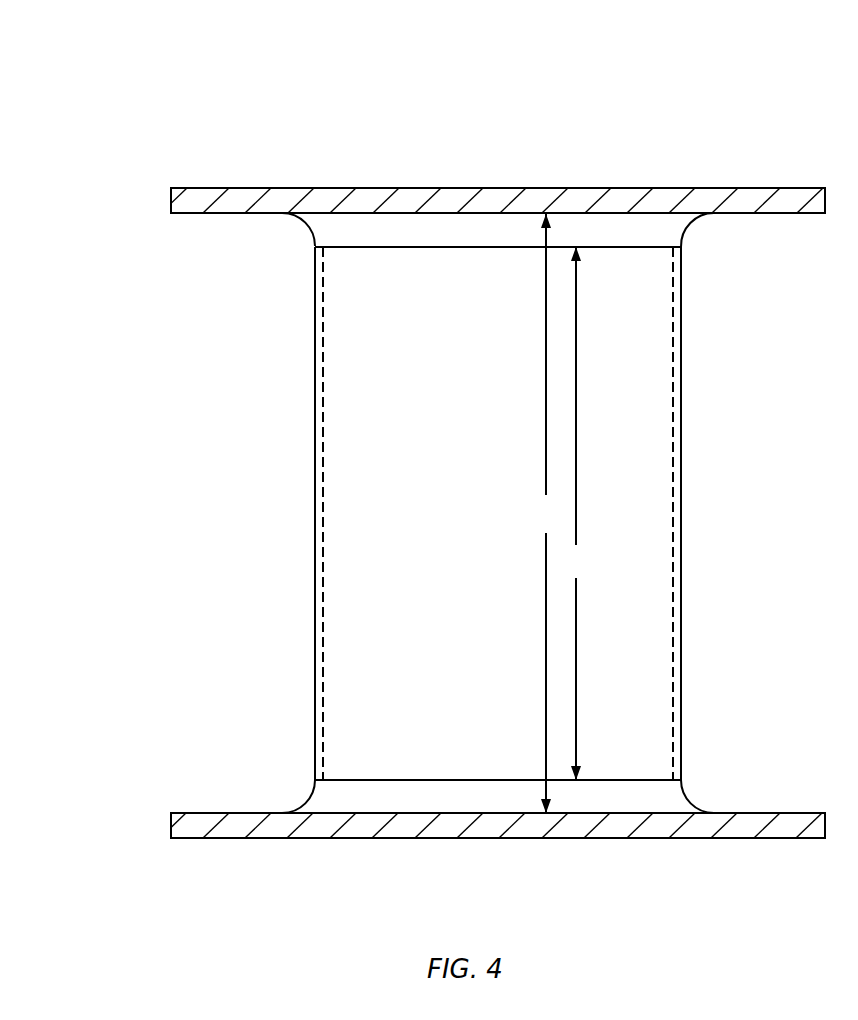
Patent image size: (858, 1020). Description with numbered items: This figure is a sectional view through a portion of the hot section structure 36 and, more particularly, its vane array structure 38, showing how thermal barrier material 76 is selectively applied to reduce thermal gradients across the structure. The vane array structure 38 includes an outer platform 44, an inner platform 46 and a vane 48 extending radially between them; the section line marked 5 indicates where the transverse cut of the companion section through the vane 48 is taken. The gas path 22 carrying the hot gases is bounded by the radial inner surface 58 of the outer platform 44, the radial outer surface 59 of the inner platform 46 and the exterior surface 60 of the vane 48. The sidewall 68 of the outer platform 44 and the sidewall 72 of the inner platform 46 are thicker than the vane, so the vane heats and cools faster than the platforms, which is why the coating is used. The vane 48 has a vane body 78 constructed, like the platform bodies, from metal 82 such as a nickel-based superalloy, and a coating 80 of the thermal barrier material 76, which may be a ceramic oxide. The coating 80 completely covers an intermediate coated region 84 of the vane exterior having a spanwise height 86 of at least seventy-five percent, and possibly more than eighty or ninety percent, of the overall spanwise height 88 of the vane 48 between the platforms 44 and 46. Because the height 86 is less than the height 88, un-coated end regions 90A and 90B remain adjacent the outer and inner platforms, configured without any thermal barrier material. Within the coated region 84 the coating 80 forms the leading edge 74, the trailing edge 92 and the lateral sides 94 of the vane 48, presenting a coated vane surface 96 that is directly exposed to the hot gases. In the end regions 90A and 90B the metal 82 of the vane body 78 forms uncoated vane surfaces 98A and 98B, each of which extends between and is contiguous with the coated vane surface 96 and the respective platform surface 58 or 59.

The gas path 22 is at (233, 348).
The hot section structure 36 is at (156, 108).
The vane array structure 38 is at (200, 148).
The outer platform 44 is at (315, 186).
The inner platform 46 is at (283, 846).
The vane 48 is at (303, 483).
The radial inner surface 58 is at (198, 214).
The radial outer surface 59 is at (196, 813).
The exterior surface 60 is at (352, 552).
The sidewall 68 is at (625, 195).
The sidewall 72 is at (645, 830).
The leading edge 74 is at (315, 410).
The thermal barrier material 76 is at (635, 470).
The vane body 78 is at (672, 283).
The coating 80 is at (685, 362).
The metal 82 is at (661, 220).
The intermediate coated region 84 is at (456, 523).
The spanwise height 86 is at (578, 513).
The overall spanwise height 88 is at (549, 513).
The un-coated end region 90A is at (298, 228).
The un-coated end region 90B is at (298, 802).
The trailing edge 92 is at (681, 420).
The lateral sides 94 is at (456, 523).
The coated vane surface 96 is at (497, 541).
The uncoated vane surface 98A is at (452, 188).
The uncoated vane surface 98B is at (445, 800).
The section line 5- 5 is at (268, 634).